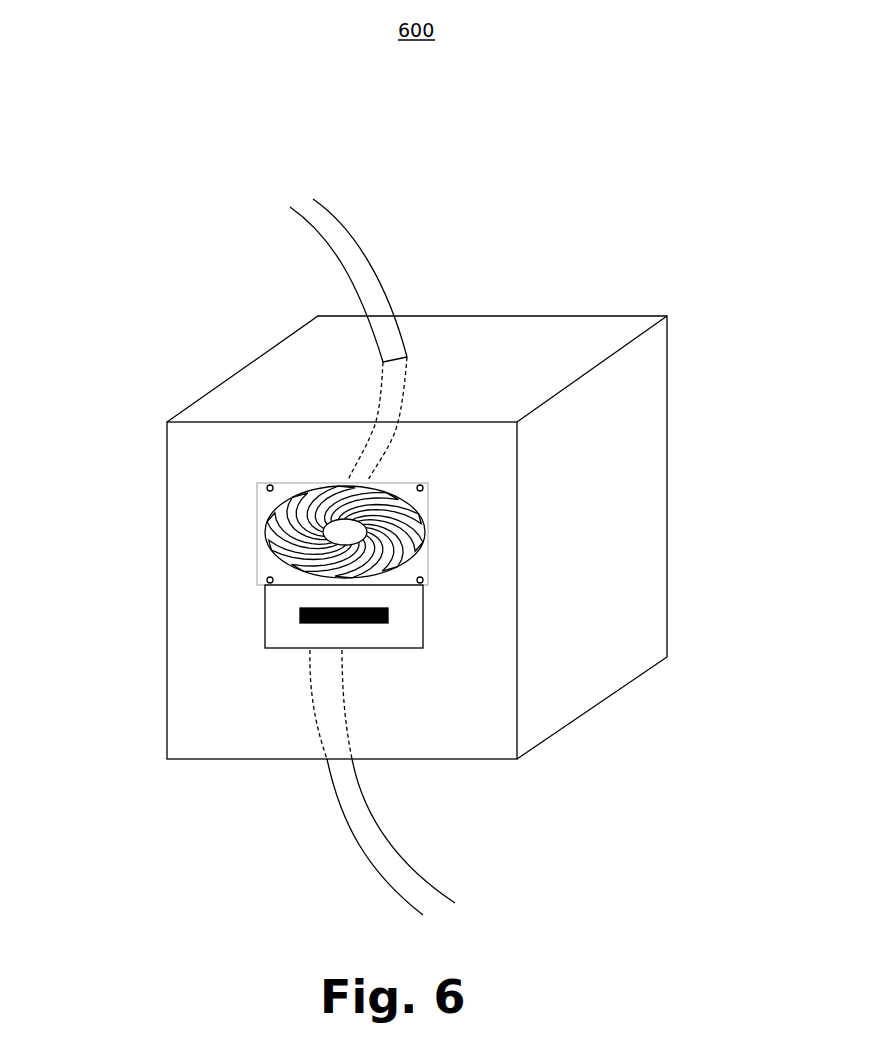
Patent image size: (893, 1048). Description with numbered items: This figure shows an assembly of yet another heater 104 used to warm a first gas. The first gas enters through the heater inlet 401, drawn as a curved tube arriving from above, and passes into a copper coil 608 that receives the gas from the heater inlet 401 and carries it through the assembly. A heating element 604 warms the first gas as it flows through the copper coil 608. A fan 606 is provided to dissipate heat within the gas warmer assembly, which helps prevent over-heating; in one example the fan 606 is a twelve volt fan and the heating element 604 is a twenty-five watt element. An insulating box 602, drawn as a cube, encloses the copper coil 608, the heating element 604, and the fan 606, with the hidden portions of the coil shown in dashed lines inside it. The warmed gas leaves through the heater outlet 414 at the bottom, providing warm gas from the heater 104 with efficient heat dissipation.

The heater 104 is at (134, 98).
The heater inlet 401 is at (308, 210).
The insulating box 602 is at (667, 427).
The heating element 604 is at (423, 602).
The fan 606 is at (432, 508).
The copper coil 608 is at (405, 380).
The heater outlet 414 is at (447, 913).